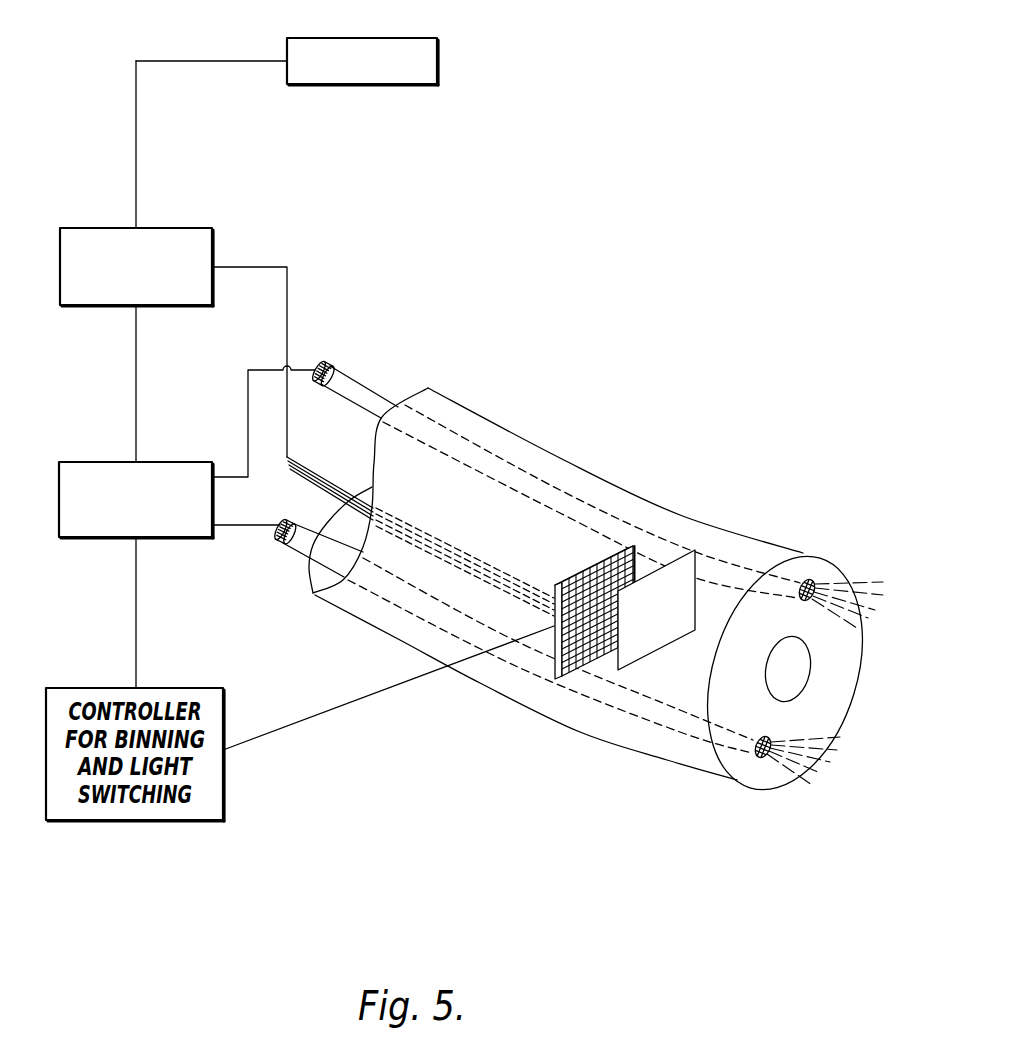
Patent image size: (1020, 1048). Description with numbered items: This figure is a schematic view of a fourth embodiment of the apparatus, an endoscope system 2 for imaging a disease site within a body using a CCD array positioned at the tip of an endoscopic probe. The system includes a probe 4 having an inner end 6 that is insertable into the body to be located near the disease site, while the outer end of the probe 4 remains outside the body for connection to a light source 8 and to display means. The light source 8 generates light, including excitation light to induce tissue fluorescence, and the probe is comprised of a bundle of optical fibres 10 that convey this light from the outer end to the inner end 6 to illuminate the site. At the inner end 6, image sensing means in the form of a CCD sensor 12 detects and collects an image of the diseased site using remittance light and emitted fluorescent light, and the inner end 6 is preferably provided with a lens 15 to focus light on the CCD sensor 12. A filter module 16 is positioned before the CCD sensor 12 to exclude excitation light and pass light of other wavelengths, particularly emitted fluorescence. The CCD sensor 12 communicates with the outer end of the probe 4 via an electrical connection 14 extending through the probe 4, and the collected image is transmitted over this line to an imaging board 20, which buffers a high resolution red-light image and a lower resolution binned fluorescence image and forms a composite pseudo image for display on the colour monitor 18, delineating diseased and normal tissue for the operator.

The endoscope system 2 is at (533, 372).
The probe 4 is at (473, 768).
The inner end 6 is at (670, 760).
The light source 8 is at (185, 462).
The optical fibres 10 is at (368, 389).
The CCD sensor 12 is at (637, 562).
The electrical connection 14 is at (323, 479).
The lens 15 is at (783, 668).
The filter module 16 is at (630, 666).
The colour monitor 18 is at (405, 38).
The imaging board 20 is at (190, 228).